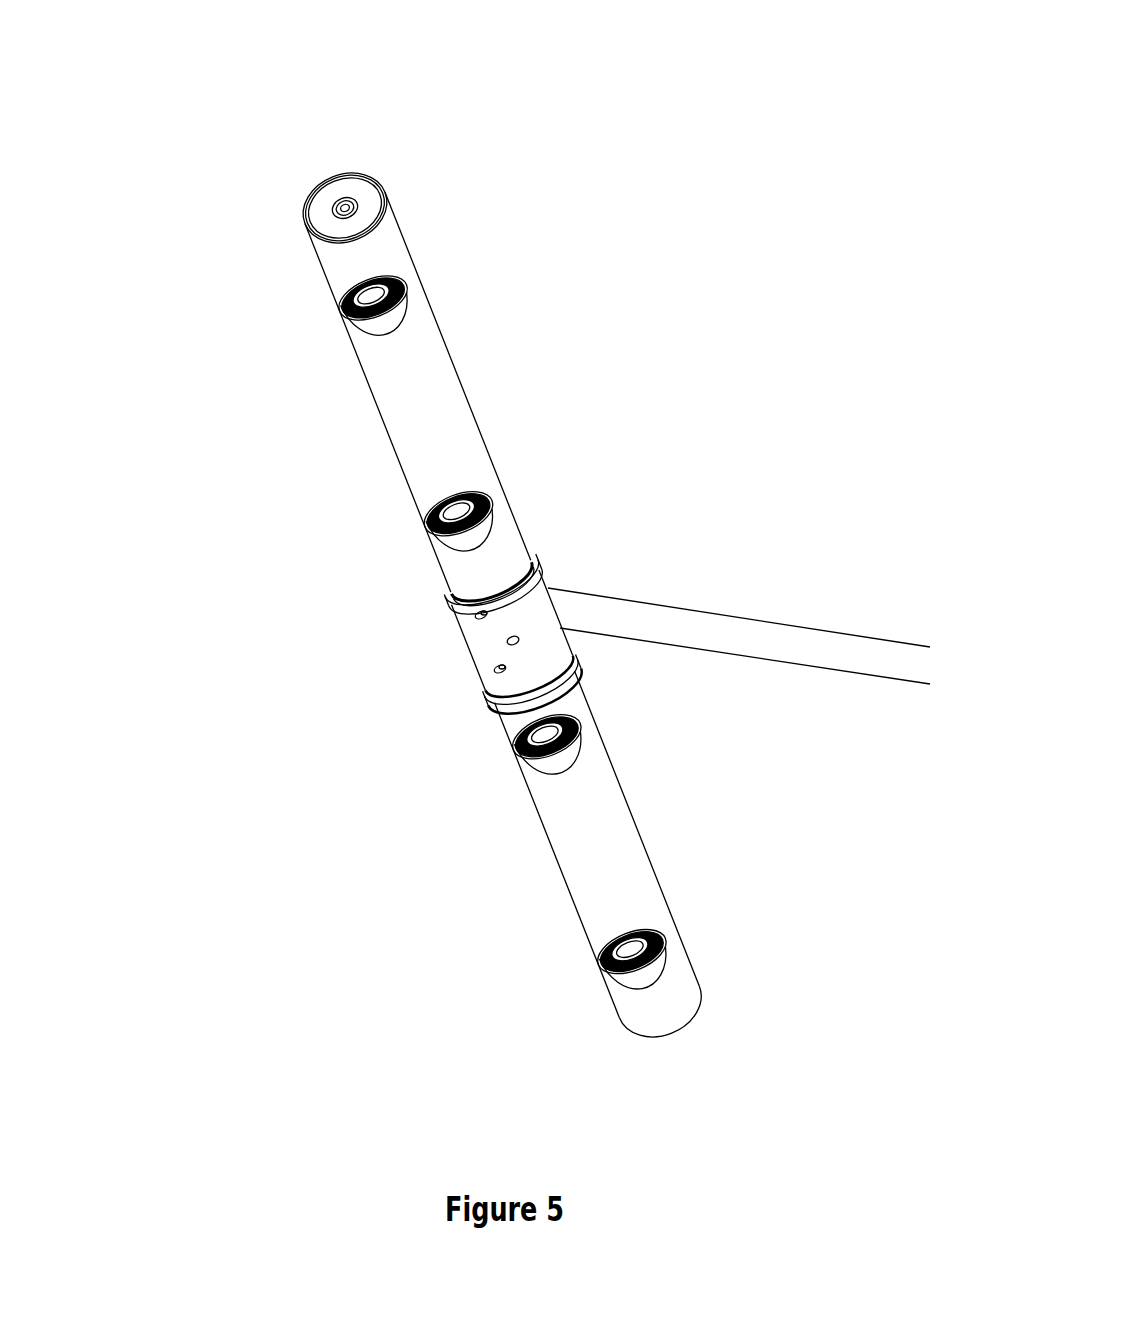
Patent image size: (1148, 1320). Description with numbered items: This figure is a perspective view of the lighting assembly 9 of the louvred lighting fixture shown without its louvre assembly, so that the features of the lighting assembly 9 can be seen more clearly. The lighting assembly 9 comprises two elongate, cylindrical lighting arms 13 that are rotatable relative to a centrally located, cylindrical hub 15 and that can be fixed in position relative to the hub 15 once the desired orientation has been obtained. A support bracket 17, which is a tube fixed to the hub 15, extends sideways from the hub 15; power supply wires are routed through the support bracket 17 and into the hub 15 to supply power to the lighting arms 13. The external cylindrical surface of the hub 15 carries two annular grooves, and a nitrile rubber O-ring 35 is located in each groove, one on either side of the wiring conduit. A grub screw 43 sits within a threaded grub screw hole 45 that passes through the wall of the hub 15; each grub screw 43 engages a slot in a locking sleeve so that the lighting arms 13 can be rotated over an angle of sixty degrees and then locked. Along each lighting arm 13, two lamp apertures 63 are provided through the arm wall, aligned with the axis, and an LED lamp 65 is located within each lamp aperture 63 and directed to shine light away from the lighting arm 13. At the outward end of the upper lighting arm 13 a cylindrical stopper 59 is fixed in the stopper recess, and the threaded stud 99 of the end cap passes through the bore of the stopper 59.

The lighting assembly 9 is at (618, 215).
The lighting arm 13 is at (323, 277).
The hub 15 is at (467, 632).
The support bracket 17 is at (770, 623).
The O-ring 35 is at (542, 572).
The grub screw 43 is at (476, 613).
The grub screw hole 45 is at (482, 613).
The stopper 59 is at (350, 182).
The lamp aperture 63 is at (408, 323).
The LED lamp 65 is at (383, 288).
The threaded stud 99 is at (330, 205).